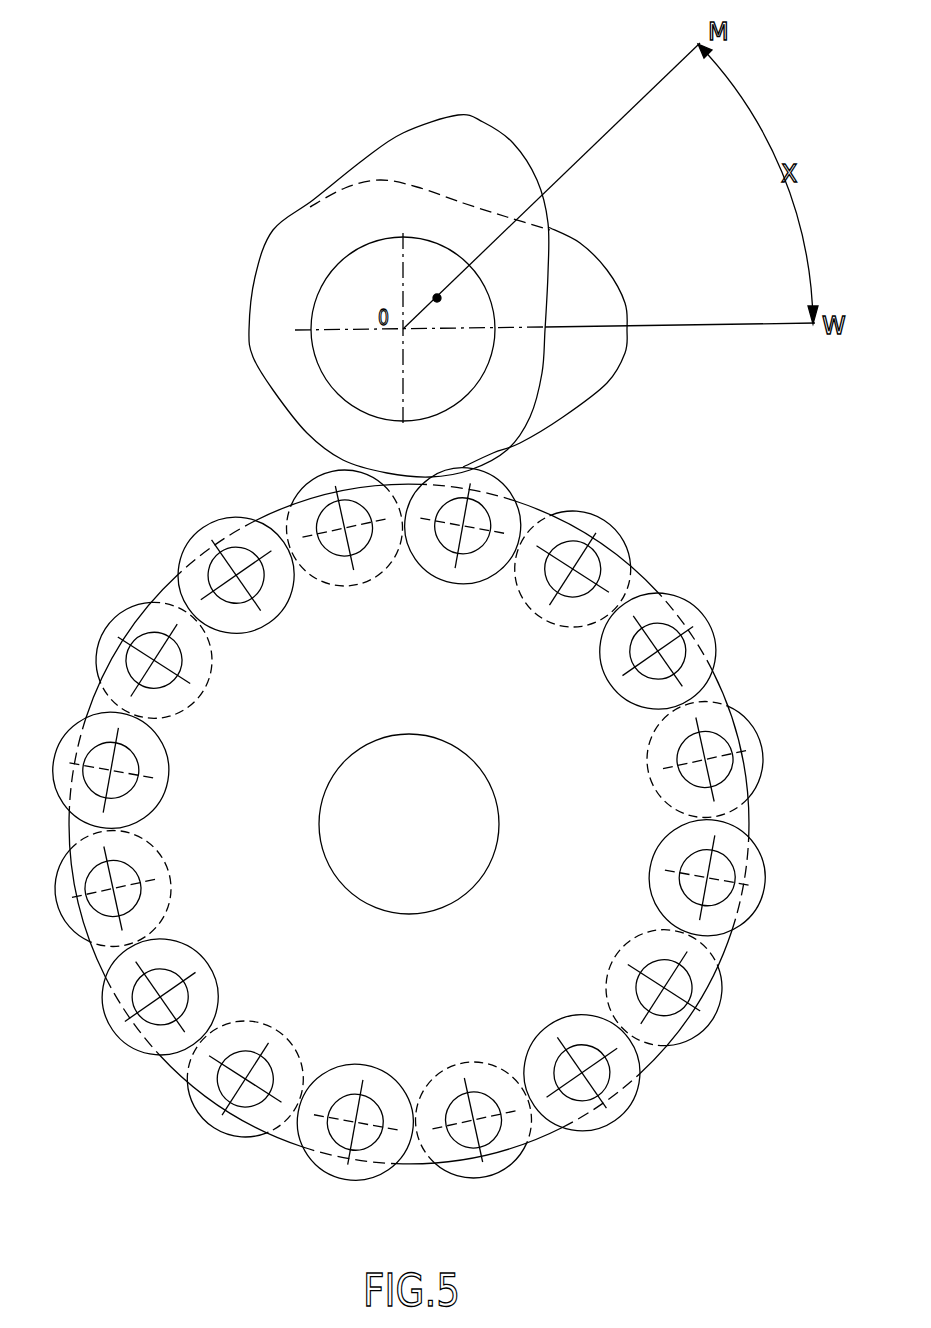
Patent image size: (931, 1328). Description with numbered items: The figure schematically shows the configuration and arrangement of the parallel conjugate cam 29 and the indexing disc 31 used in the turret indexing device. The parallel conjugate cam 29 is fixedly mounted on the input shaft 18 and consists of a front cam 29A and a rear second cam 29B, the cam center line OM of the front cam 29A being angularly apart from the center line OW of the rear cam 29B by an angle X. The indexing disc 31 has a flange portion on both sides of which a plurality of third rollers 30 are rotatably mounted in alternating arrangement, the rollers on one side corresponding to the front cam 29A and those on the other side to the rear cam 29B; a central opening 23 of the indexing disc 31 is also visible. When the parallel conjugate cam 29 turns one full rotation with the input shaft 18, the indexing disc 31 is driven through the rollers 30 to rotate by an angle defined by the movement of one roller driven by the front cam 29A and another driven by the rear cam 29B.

The input shaft 18 is at (437, 298).
The central hole 23 is at (443, 786).
The parallel conjugate cam 29 is at (489, 246).
The front cam 29A is at (472, 117).
The rear cam 29B is at (623, 293).
The third rollers 30 is at (653, 607).
The indexing disc 31 is at (463, 625).